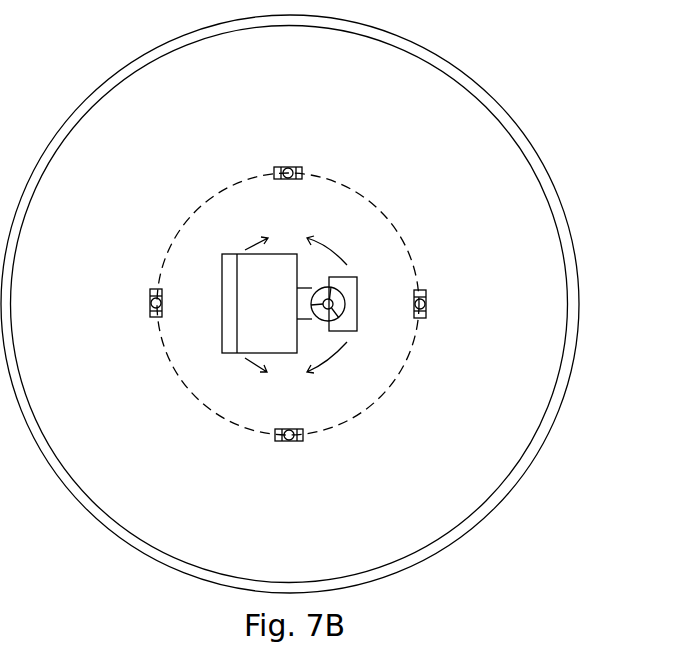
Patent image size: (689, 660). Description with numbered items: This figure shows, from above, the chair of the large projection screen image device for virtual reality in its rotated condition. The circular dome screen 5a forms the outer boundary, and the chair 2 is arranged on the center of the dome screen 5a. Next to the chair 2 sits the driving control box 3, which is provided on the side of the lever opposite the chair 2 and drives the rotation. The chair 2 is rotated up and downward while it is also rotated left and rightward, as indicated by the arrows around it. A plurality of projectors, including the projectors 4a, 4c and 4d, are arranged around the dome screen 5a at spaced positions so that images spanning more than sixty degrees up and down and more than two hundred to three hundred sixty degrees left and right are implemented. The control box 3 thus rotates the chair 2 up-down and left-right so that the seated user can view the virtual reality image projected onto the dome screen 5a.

The chair 2 is at (282, 348).
The driving control box 3 is at (338, 289).
The projector 4a is at (148, 308).
The projector 4c is at (427, 309).
The projector 4d is at (296, 166).
The dome screen 5a is at (508, 122).